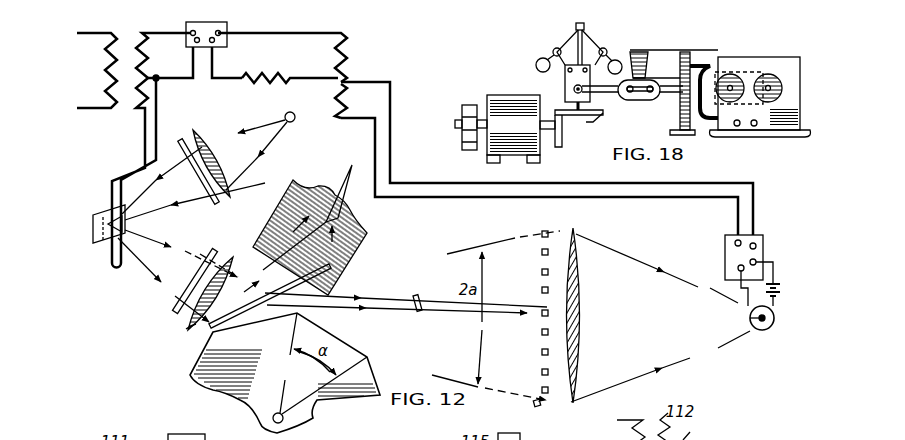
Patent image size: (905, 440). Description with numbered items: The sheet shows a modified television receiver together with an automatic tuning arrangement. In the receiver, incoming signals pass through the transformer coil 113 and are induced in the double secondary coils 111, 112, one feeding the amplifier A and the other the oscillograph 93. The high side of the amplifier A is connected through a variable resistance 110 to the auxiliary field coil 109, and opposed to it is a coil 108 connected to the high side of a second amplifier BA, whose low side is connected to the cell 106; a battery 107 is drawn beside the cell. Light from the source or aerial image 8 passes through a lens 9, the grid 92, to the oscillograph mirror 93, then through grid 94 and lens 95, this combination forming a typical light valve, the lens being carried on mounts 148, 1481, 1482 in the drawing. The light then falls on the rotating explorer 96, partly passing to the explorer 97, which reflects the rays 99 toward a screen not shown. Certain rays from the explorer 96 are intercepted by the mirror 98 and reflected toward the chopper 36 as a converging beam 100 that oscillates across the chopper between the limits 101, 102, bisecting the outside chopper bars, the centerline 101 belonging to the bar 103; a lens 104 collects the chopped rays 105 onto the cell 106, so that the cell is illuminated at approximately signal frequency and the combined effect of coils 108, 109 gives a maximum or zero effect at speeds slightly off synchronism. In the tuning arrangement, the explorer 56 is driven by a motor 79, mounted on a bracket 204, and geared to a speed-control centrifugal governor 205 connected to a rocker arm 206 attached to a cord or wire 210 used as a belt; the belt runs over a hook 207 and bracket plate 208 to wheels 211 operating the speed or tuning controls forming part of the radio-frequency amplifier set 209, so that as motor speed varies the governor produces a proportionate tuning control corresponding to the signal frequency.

In FIG. 12, the transformer coil 113 is at (110, 46).
In FIG. 12, the secondary coil 111 is at (150, 68).
In FIG. 12, the secondary coil 112 is at (141, 111).
In FIG. 12, the amplifier A is at (214, 50).
In FIG. 12, the variable resistance 110 is at (270, 70).
In FIG. 12, the auxiliary field coil 109 is at (336, 60).
In FIG. 12, the coil 108 is at (337, 100).
In FIG. 12, the light source or aerial image 8 is at (262, 151).
In FIG. 12, the lens 9 is at (207, 138).
In FIG. 12, the grid 92 is at (207, 188).
In FIG. 12, the lens mount 1481 is at (176, 183).
In FIG. 12, the oscillograph mirror 93 is at (94, 224).
In FIG. 12, the lens 148 is at (241, 292).
In FIG. 12, the lens mount 1482 is at (160, 262).
In FIG. 12, the grid 94 is at (172, 310).
In FIG. 12, the lens 95 is at (188, 328).
In FIG. 12, the mirror 98 is at (262, 298).
In FIG. 12, the explorer 97 is at (362, 234).
In FIG. 12, the rays 99 is at (307, 215).
In FIG. 12, the explorer 96 is at (285, 373).
In FIG. 12, the converging beam 100 is at (417, 296).
In FIG. 12, the limit or centerline 101 is at (495, 241).
In FIG. 12, the limit or centerline 102 is at (470, 381).
In FIG. 12, the chopper bar 103 is at (545, 228).
In FIG. 12, the chopper 36 is at (542, 290).
In FIG. 12, the lens 104 is at (578, 268).
In FIG. 12, the light rays 105 is at (674, 270).
In FIG. 12, the amplifier BA is at (728, 253).
In FIG. 12, the battery 107 is at (781, 290).
In FIG. 12, the cell 106 is at (768, 331).
In FIG. 18, the explorer 56 is at (472, 105).
In FIG. 18, the motor 79 is at (521, 129).
In FIG. 18, the bracket 204 is at (580, 116).
In FIG. 18, the speed-control centrifugal governor 205 is at (576, 62).
In FIG. 18, the rocker arm 206 is at (668, 94).
In FIG. 18, the hook 207 is at (706, 118).
In FIG. 18, the bracket plate 208 is at (678, 52).
In FIG. 18, the radio-frequency amplifier set 209 is at (791, 82).
In FIG. 18, the cord or wire 210 is at (712, 70).
In FIG. 18, the wheel 211 is at (760, 82).